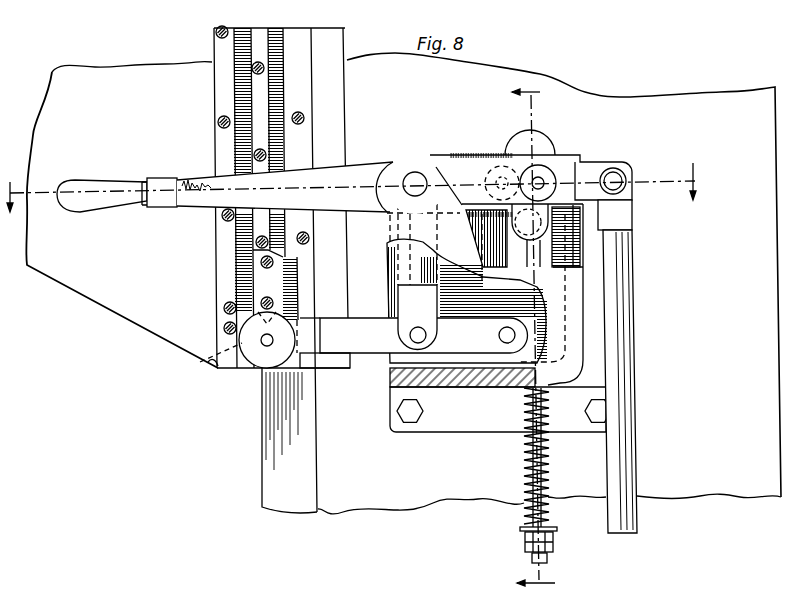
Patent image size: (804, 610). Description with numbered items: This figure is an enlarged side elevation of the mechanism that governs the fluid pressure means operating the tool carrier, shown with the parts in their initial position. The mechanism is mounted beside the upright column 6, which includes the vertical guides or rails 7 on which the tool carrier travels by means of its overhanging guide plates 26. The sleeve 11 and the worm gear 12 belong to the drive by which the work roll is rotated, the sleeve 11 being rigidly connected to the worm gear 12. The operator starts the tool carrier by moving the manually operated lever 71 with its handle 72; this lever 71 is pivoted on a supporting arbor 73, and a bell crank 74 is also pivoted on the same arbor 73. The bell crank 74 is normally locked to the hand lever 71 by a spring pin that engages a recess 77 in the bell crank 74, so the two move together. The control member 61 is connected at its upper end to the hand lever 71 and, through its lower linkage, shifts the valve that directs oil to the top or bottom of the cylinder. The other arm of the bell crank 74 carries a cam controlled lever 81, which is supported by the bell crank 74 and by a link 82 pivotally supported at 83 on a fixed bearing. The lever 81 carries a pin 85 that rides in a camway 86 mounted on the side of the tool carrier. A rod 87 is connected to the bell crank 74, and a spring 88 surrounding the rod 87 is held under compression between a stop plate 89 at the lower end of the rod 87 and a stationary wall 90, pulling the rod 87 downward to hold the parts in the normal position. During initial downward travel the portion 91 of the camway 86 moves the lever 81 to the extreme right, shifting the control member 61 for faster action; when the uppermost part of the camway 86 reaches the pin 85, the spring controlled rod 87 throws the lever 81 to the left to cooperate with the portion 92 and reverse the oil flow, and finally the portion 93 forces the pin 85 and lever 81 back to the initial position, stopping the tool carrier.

The column 6 is at (728, 487).
The vertical guides 7 is at (280, 447).
The sleeve 11 is at (524, 341).
The worm gear 12 is at (361, 200).
The guide plates 26 is at (332, 55).
The control member 61 is at (620, 487).
The lever 71 is at (353, 173).
The handle 72 is at (82, 190).
The supporting arbor 73 is at (410, 178).
The bell crank 74 is at (400, 258).
The recess 77 is at (543, 178).
The lever 81 is at (377, 352).
The link 82 is at (515, 222).
The pivot 83 is at (497, 160).
The pin 85 is at (258, 360).
The camway 86 is at (272, 148).
The rod 87 is at (545, 477).
The spring 88 is at (527, 514).
The stop plate 89 is at (555, 533).
The stationary wall 90 is at (510, 390).
The camway portion 91 is at (290, 287).
The camway portion 92 is at (243, 258).
The camway portion 93 is at (212, 360).